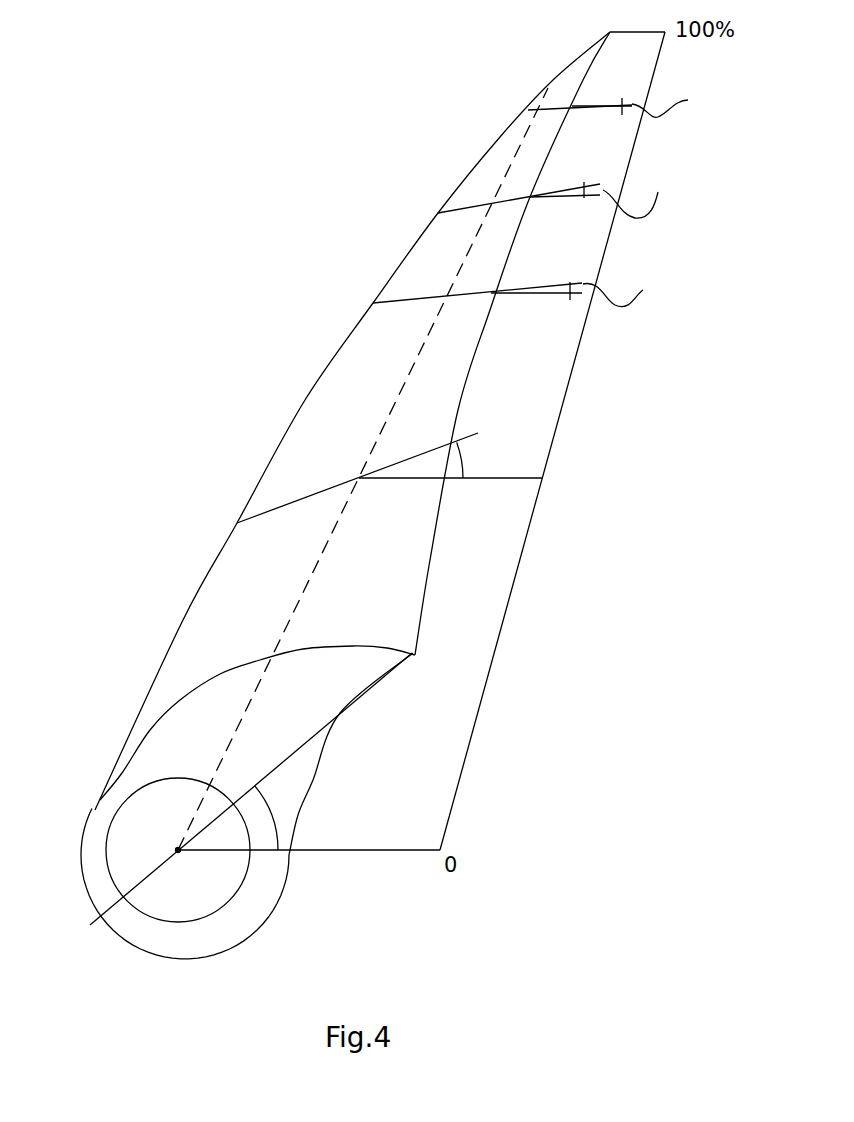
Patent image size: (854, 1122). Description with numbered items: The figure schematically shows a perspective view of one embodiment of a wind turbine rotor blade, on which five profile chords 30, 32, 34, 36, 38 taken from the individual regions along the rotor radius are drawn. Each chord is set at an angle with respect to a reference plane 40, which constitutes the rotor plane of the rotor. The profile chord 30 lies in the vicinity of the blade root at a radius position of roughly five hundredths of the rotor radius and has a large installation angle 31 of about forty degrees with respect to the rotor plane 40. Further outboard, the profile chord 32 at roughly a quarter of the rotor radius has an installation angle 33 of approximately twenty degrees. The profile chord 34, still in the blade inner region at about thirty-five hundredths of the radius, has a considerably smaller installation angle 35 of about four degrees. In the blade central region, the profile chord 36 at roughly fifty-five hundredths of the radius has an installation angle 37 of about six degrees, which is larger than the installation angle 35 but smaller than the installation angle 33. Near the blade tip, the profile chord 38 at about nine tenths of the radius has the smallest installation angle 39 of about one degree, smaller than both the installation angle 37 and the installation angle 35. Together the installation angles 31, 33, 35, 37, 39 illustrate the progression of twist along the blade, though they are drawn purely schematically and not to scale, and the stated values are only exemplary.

The profile chord 30 is at (112, 905).
The installation angle 31 is at (260, 843).
The profile chord 32 is at (283, 505).
The installation angle 33 is at (405, 468).
The profile chord 34 is at (412, 300).
The installation angle 35 is at (543, 294).
The profile chord 36 is at (472, 205).
The installation angle 37 is at (570, 187).
The profile chord 38 is at (533, 100).
The installation angle 39 is at (611, 103).
The reference plane 40 is at (442, 720).